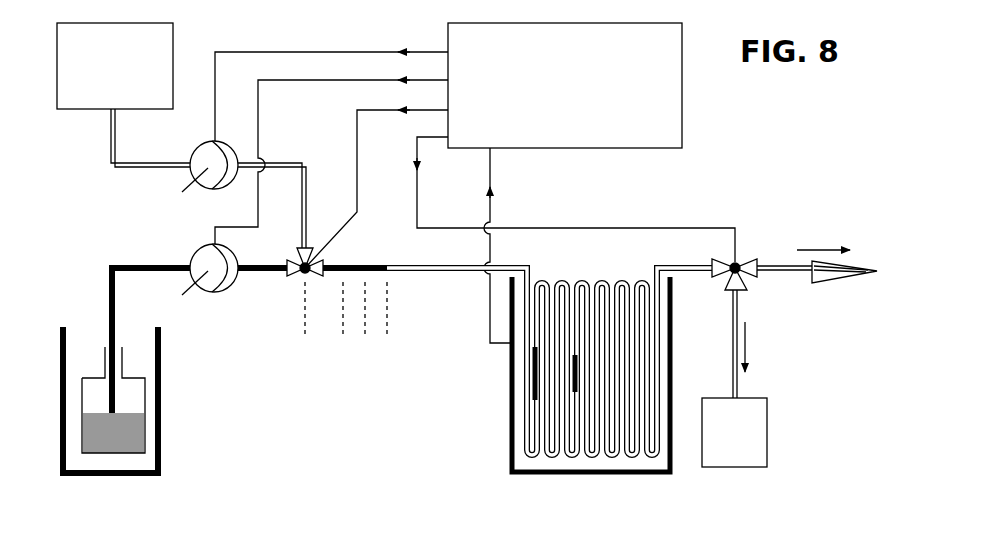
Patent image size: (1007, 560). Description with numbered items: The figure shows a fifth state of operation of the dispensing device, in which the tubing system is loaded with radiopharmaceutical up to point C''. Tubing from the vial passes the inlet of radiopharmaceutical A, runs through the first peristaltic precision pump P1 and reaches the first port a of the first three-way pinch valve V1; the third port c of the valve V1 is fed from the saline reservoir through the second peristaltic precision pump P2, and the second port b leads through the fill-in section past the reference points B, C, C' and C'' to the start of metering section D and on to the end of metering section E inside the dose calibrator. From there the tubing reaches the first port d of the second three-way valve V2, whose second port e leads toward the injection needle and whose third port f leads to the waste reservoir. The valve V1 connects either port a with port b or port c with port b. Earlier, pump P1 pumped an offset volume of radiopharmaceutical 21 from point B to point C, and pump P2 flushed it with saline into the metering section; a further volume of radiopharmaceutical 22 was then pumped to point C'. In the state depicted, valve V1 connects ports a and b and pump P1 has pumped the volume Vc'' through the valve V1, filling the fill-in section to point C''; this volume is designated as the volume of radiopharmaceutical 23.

The first peristaltic precision pump P1 is at (208, 270).
The second peristaltic precision pump P2 is at (208, 170).
The first three-way pinch valve V1 is at (302, 272).
The second three-way valve V2 is at (737, 258).
The inlet of radiopharmaceutical A is at (122, 458).
The reference point B is at (302, 324).
The reference point C is at (341, 324).
The reference point C' is at (365, 324).
The reference point C'' is at (389, 324).
The start of metering section D is at (531, 268).
The end of metering section E is at (654, 268).
The first port of first valve a is at (259, 255).
The second port of first valve b is at (338, 255).
The third port of first valve c is at (295, 236).
The first port of second valve d is at (697, 255).
The second port of second valve e is at (772, 255).
The third port of second valve f is at (723, 307).
The volume of radiopharmaceutical 21 is at (574, 382).
The volume of radiopharmaceutical 22 is at (534, 372).
The volume of radiopharmaceutical 23 is at (332, 274).